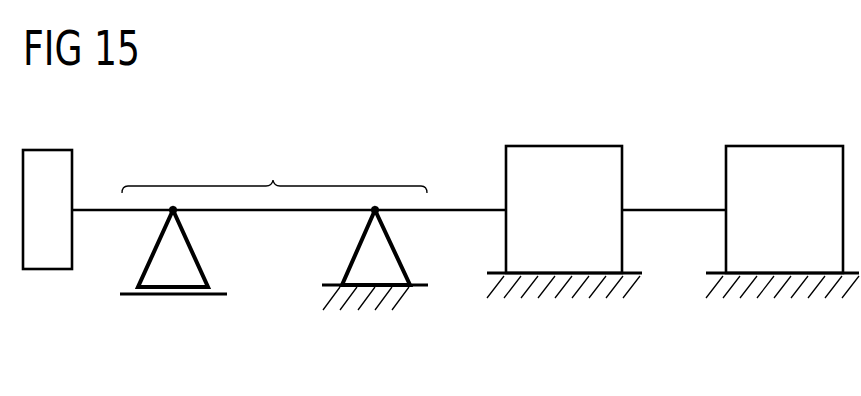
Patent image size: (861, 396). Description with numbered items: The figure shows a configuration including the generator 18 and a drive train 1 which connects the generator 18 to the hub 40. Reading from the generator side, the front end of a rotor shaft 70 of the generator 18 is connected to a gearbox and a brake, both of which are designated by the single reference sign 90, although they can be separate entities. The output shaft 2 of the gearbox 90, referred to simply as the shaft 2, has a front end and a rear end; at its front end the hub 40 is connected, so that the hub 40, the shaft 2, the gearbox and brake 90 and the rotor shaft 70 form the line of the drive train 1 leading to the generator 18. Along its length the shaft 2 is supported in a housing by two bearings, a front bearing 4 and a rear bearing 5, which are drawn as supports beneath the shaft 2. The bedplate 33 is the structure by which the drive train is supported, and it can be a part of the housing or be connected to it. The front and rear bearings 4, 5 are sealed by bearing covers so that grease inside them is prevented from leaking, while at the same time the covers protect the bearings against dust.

The drive train 1 is at (274, 169).
The shaft 2 is at (258, 213).
The front bearing 4 is at (172, 272).
The rear bearing 5 is at (365, 258).
The generator 18 is at (783, 160).
The bedplate 33 is at (405, 310).
The hub 40 is at (48, 270).
The rotor shaft 70 is at (673, 208).
The gearbox and brake 90 is at (562, 160).